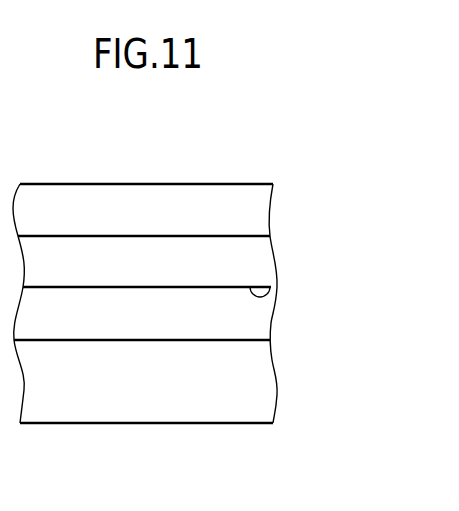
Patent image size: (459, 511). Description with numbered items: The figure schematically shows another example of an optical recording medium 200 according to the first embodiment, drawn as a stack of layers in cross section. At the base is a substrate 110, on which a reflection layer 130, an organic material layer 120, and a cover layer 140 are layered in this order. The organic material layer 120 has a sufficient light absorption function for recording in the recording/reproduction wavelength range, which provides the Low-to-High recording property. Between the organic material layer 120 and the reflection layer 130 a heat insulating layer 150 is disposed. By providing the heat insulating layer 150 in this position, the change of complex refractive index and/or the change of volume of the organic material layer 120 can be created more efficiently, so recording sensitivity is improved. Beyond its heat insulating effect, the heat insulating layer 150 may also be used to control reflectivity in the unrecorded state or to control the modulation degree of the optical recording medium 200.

The optical recording medium 200 is at (224, 154).
The cover layer 140 is at (266, 213).
The organic material layer 120 is at (265, 255).
The heat insulating layer 150 is at (268, 298).
The reflection layer 130 is at (265, 324).
The substrate 110 is at (265, 378).